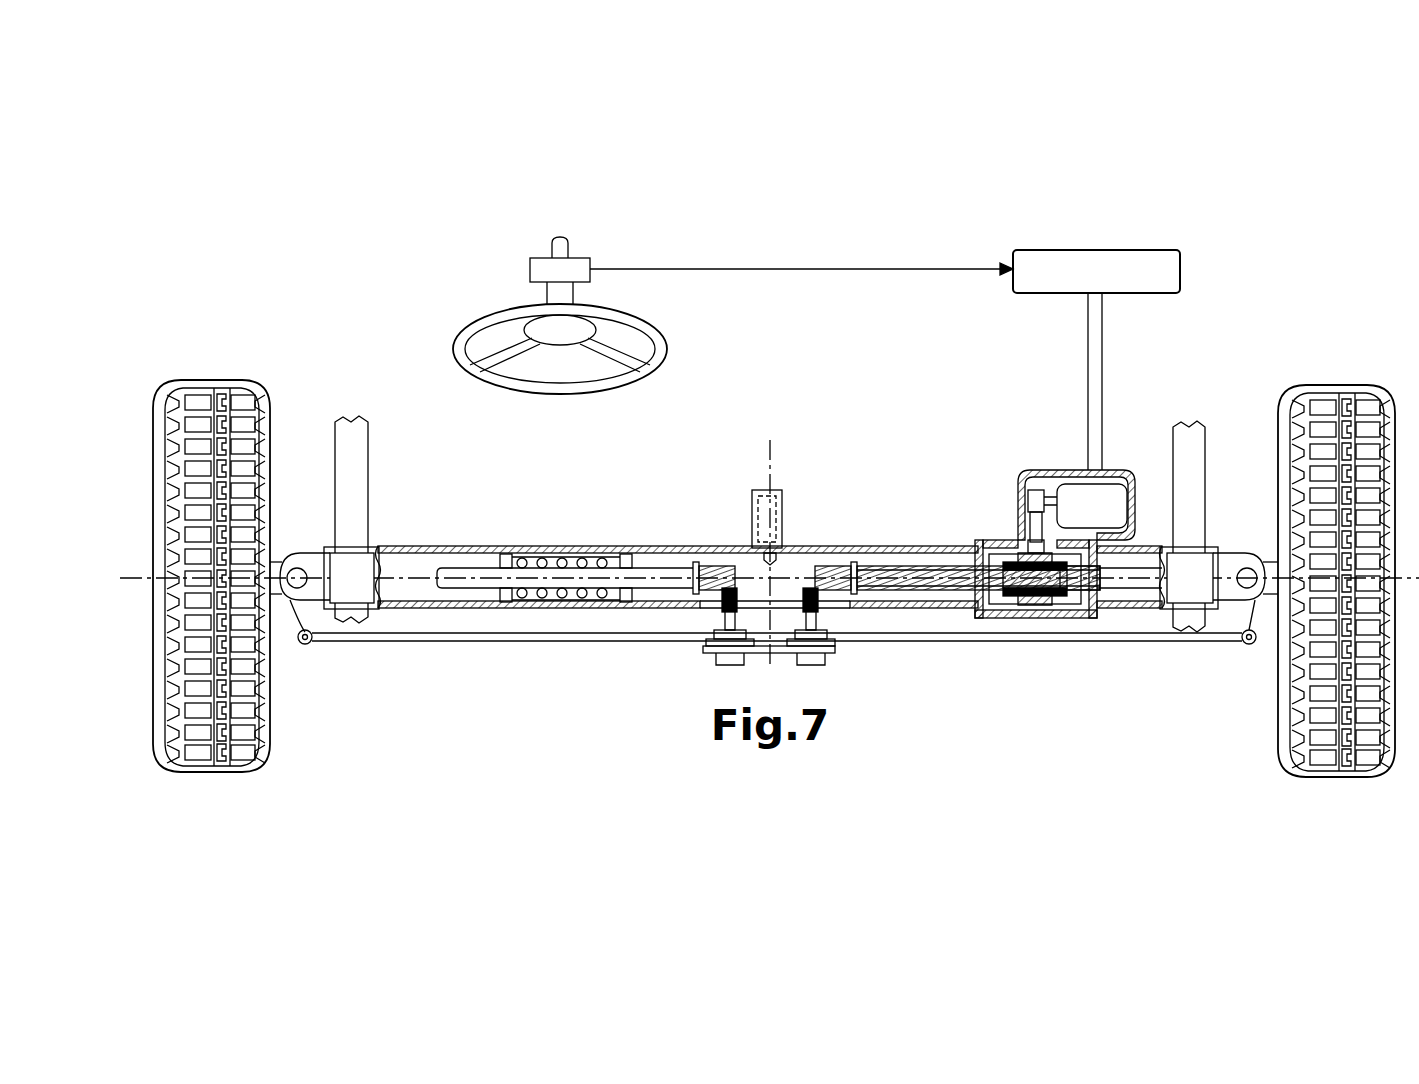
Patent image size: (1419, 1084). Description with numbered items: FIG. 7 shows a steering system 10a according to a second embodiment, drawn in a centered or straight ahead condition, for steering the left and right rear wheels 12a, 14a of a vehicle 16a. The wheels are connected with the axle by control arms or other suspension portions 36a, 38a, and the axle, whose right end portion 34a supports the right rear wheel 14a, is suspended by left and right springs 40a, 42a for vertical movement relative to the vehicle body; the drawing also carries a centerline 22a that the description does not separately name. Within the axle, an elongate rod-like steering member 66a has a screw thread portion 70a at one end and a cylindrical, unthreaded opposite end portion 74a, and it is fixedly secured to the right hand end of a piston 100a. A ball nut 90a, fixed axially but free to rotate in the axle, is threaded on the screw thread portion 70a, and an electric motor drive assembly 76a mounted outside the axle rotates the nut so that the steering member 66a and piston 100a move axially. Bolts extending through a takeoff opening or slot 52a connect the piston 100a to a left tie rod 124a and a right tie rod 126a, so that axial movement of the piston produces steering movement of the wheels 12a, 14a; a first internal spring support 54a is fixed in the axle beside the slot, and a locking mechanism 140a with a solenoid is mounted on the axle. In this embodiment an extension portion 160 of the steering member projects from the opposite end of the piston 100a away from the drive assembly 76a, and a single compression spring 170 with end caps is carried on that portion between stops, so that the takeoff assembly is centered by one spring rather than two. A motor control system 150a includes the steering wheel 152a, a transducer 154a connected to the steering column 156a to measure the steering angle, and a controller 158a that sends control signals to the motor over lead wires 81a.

The steering system 10a is at (372, 270).
The left rear wheel 12a is at (232, 745).
The right rear wheel 14a is at (1302, 742).
The vehicle 16a is at (330, 302).
The axis 22a is at (145, 582).
The second end portion of the axle 34a is at (1133, 622).
The suspension portions 36a is at (280, 565).
The suspension portions 38a is at (1262, 568).
The left spring 40a is at (355, 450).
The right spring 42a is at (1198, 455).
The takeoff opening 52a is at (710, 615).
The first internal spring support 54a is at (980, 612).
The steering member 66a is at (867, 552).
The screw thread portion 70a is at (1103, 592).
The opposite end portion 74a is at (866, 592).
The electric motor drive assembly 76a is at (1000, 500).
The lead wires 81a is at (1090, 395).
The ball nut 90a is at (1033, 602).
The piston 100a is at (738, 570).
The left tie rod 124a is at (352, 645).
The right tie rod 126a is at (1191, 643).
The locking mechanism 140a is at (788, 510).
The motor control system 150a is at (1195, 178).
The steering wheel 152a is at (492, 372).
The transducer 154a is at (542, 270).
The steering column 156a is at (566, 242).
The controller 158a is at (1123, 258).
The extension portion 160 is at (467, 590).
The spring 170 is at (575, 560).